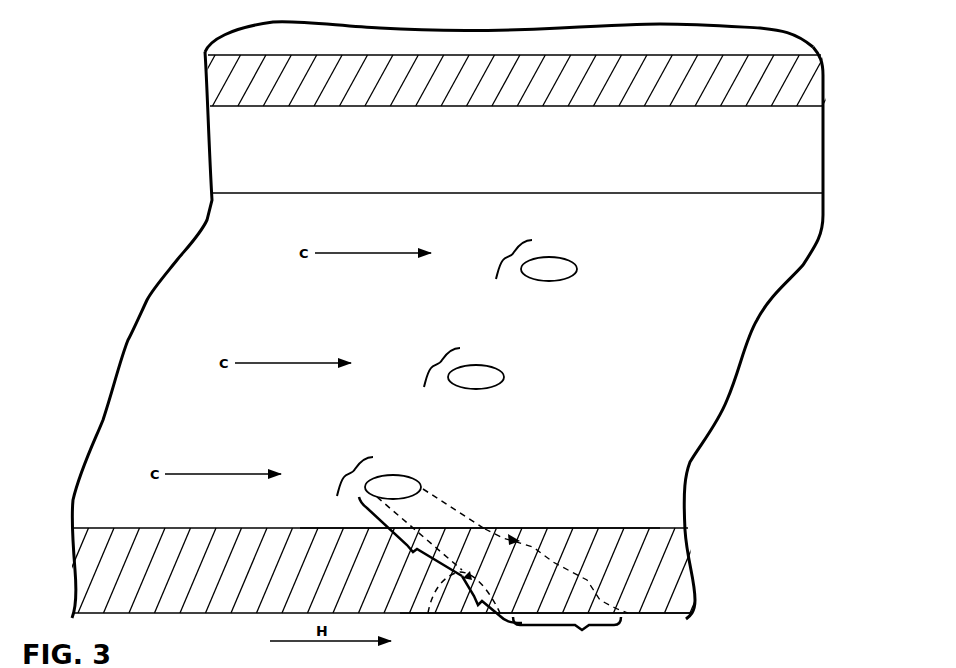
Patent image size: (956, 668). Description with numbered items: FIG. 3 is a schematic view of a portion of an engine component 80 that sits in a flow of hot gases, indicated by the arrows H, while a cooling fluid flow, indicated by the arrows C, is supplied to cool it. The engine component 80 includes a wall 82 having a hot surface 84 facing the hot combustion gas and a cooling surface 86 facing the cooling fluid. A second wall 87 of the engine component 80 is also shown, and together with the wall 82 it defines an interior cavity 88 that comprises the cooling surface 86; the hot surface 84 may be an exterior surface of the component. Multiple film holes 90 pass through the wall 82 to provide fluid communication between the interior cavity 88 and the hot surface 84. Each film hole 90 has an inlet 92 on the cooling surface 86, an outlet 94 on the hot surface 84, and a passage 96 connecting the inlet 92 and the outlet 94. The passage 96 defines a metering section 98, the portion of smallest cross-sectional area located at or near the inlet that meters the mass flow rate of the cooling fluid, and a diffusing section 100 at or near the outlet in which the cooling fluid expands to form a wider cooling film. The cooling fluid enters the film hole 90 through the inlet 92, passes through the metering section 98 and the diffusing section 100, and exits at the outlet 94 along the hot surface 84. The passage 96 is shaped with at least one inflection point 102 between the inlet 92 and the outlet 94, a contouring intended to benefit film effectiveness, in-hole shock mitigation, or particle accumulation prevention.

The engine component 80 is at (663, 185).
The wall 82 is at (64, 528).
The hot surface 84 is at (665, 614).
The cooling surface 86 is at (652, 508).
The second wall 87 is at (808, 74).
The interior cavity 88 is at (490, 157).
The film hole 90 is at (581, 262).
The inlet 92 is at (430, 365).
The outlet 94 is at (567, 634).
The passage 96 is at (458, 512).
The metering section 98 is at (410, 536).
The diffusing section 100 is at (486, 609).
The inflection point 102 is at (514, 538).